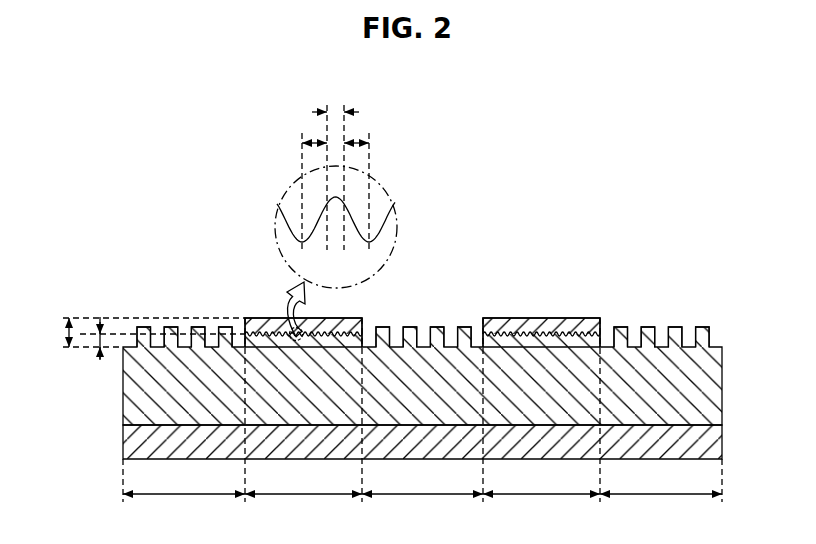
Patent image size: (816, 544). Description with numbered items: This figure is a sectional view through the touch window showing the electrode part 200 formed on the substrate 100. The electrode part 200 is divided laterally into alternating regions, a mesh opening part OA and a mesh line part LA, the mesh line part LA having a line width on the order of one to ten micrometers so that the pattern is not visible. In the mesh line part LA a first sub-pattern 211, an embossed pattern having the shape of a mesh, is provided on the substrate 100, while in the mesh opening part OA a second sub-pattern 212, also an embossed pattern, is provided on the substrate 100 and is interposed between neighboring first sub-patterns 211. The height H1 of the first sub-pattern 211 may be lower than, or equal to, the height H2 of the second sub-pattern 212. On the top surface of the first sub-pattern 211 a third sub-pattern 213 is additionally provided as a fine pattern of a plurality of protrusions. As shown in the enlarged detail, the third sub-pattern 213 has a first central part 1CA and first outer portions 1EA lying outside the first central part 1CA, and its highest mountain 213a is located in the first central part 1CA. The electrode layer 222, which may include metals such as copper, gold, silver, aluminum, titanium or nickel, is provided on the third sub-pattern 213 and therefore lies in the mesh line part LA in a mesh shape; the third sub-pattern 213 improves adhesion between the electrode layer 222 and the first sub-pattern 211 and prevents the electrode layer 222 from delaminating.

The substrate 100 is at (722, 440).
The electrode part 200 is at (722, 387).
The first sub-pattern 211 is at (586, 345).
The second sub-pattern 212 is at (698, 327).
The third sub-pattern 213 is at (503, 333).
The highest mountain 213a is at (336, 197).
The electrode layer 222 is at (537, 324).
The height of the first sub-pattern H1 is at (90, 338).
The height of the second sub-pattern H2 is at (55, 332).
The first central part 1CA is at (335, 99).
The first outer portions 1EA is at (335, 132).
The mesh opening part OA is at (422, 506).
The mesh line part LA is at (422, 506).